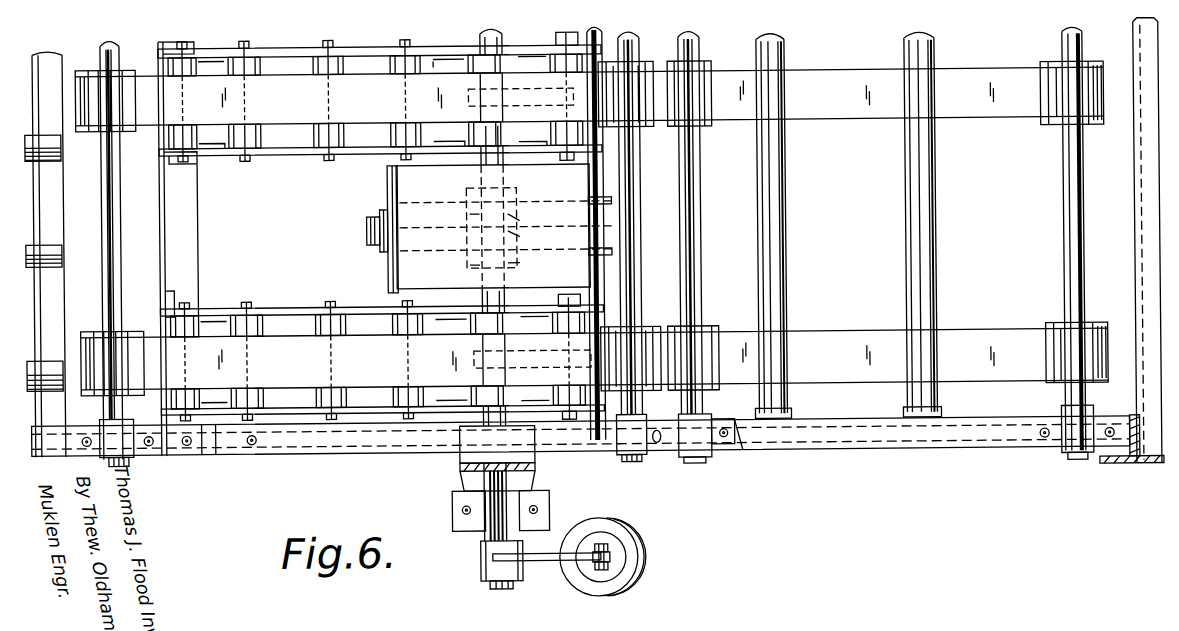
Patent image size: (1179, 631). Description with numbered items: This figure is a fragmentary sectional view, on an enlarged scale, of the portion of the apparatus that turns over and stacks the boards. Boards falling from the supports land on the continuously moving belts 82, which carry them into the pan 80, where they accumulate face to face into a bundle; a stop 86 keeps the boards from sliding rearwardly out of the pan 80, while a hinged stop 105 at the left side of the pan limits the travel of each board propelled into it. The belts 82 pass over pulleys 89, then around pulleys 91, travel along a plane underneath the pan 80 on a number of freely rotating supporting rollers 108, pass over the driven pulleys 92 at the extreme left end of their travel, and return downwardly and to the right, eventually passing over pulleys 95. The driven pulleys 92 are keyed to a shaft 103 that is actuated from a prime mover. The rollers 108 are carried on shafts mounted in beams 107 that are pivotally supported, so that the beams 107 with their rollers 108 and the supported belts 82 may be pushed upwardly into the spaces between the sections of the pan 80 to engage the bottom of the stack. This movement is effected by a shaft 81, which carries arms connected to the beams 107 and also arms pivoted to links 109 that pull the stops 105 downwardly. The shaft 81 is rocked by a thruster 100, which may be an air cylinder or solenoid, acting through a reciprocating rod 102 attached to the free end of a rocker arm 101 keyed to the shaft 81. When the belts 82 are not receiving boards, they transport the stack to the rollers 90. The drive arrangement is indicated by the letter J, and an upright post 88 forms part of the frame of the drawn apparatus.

The pan 80 is at (420, 190).
The shaft 81 is at (541, 484).
The belts 82 is at (288, 118).
The stop 86 is at (599, 170).
The upright post 88 is at (778, 63).
The pulleys 89 is at (642, 64).
The rollers 90 is at (45, 135).
The pulleys 91 is at (709, 130).
The driven pulleys 92 is at (126, 129).
The pulleys 95 is at (1093, 130).
The thruster 100 is at (652, 554).
The rocker arm 101 is at (545, 562).
The reciprocating rod 102 is at (621, 548).
The shaft 103 is at (120, 250).
The stop 105 is at (388, 172).
The beams 107 is at (347, 45).
The supporting rollers 108 is at (262, 60).
The links 109 is at (371, 232).
The drive assembly J is at (566, 284).